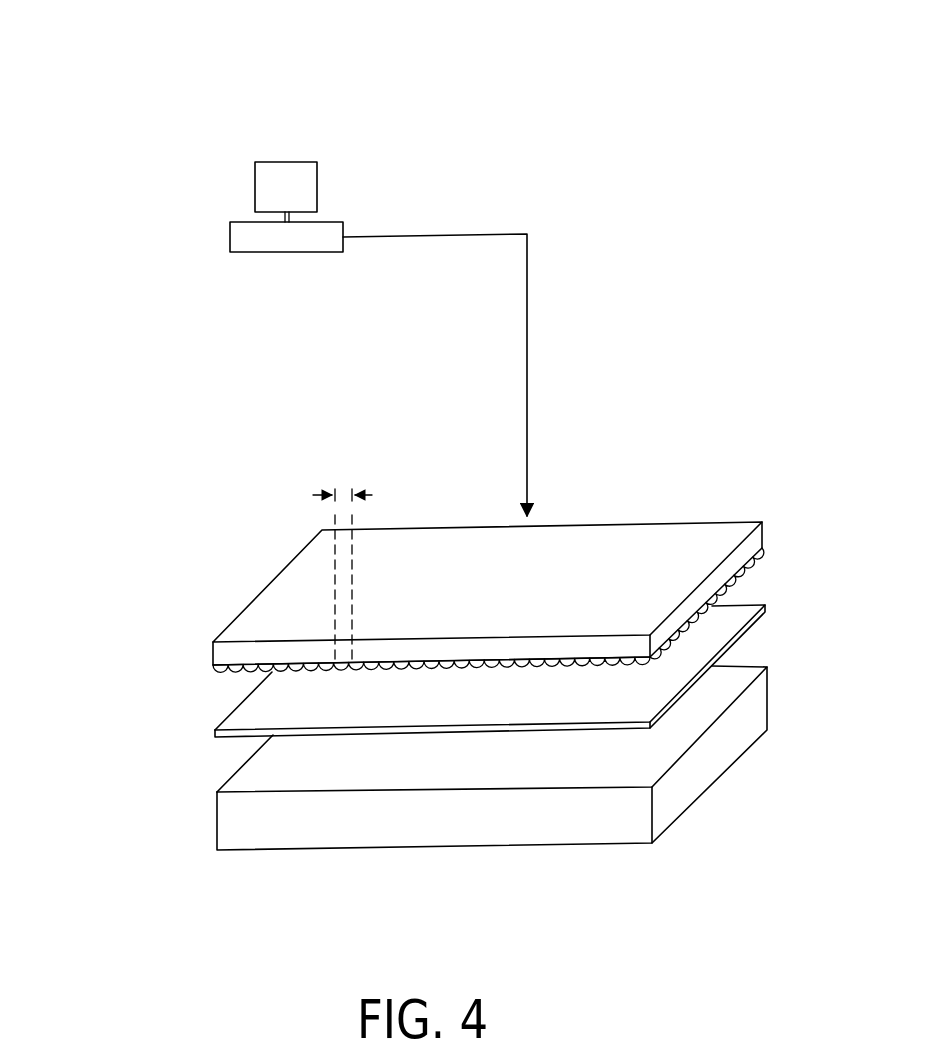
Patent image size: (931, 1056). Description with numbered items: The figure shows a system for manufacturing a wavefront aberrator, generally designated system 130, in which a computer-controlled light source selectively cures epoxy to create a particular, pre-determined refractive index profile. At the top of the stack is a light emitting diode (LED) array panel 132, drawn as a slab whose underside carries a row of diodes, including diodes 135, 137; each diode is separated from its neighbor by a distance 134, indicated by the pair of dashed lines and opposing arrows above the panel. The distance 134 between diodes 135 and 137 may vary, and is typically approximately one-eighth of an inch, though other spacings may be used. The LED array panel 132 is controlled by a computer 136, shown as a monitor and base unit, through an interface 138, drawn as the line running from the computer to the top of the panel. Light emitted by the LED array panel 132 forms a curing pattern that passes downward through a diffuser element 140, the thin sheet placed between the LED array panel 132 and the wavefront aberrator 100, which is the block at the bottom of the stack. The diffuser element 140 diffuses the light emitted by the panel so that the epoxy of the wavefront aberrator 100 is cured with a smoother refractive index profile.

The wavefront aberrator 100 is at (205, 824).
The system for manufacturing the wavefront aberrator 130 is at (756, 119).
The light emitting diode (LED) array panel 132 is at (452, 596).
The distance between diodes 134 is at (372, 495).
The diode 135 is at (222, 677).
The computer 136 is at (218, 236).
The diode 137 is at (240, 678).
The interface 138 is at (413, 233).
The diffuser element 140 is at (767, 607).